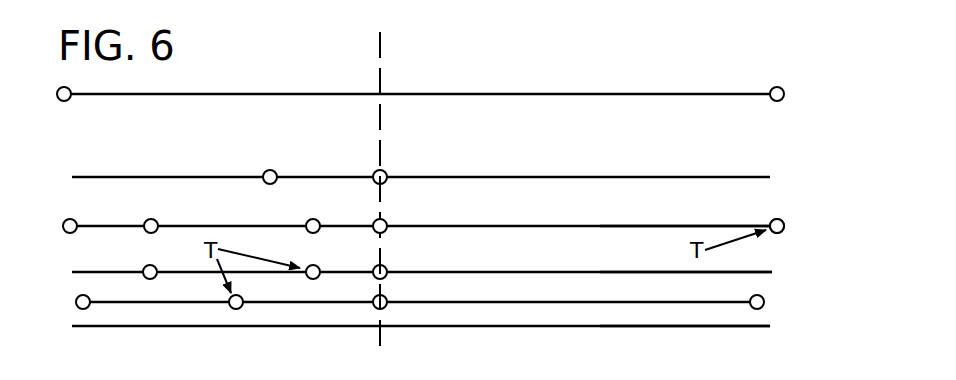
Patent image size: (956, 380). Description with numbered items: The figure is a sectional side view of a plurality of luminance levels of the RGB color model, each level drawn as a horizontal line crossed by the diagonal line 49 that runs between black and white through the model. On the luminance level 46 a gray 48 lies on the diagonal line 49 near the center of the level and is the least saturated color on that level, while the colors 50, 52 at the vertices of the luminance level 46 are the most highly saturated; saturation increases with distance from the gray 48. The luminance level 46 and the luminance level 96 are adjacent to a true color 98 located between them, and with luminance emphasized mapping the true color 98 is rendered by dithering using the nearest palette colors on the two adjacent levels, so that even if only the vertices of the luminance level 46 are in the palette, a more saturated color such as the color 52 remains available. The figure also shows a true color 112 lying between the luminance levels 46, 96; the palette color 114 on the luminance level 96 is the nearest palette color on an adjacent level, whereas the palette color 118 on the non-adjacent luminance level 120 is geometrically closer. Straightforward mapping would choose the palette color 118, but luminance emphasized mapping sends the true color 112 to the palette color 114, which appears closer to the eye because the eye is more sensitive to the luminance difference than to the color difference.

The diagonal line 49 is at (381, 57).
The luminance level 46 is at (727, 225).
The gray 48 is at (386, 221).
The color at vertex 52 is at (783, 230).
The color at vertex 50 is at (66, 231).
The true color 112 is at (200, 246).
The palette color 114 is at (318, 266).
The palette color 118 is at (242, 310).
The true color 98 is at (686, 247).
The luminance level 96 is at (757, 273).
The luminance level 120 is at (725, 305).